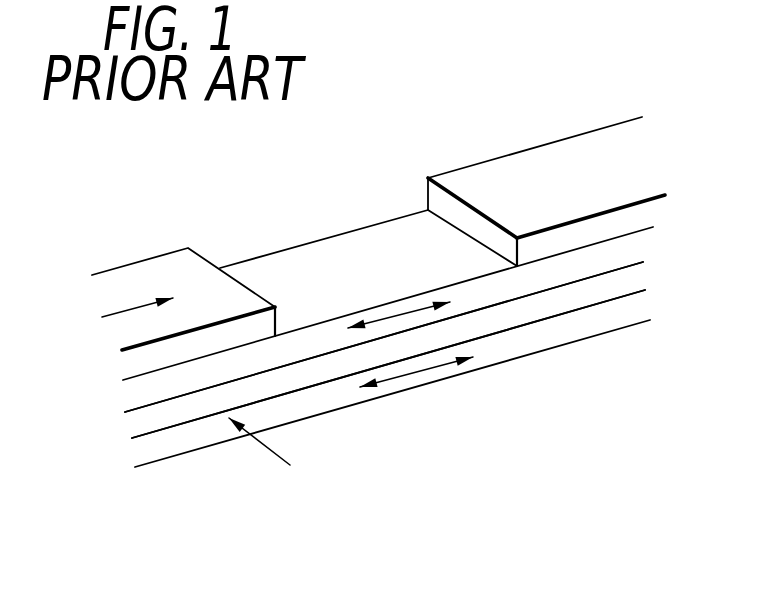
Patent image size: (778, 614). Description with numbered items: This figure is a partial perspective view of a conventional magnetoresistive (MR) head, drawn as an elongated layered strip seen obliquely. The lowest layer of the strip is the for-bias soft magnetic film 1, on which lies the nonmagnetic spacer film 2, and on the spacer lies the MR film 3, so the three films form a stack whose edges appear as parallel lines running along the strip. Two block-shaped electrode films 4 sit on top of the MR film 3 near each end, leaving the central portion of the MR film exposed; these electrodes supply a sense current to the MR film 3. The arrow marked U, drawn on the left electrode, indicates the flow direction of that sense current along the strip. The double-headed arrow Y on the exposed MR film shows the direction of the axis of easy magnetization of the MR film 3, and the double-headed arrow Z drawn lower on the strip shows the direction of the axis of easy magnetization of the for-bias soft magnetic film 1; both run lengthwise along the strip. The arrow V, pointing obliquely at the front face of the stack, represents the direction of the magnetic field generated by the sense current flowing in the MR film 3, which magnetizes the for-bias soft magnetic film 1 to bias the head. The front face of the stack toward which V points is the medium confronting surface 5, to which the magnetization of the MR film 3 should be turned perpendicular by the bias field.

The for-bias soft magnetic film 1 is at (633, 309).
The nonmagnetic spacer film 2 is at (637, 281).
The MR film 3 is at (642, 249).
The electrode films 4 is at (643, 216).
The medium confronting surface 5 is at (139, 424).
The flow direction of the sense current U is at (133, 300).
The direction of a magnetic field generated by the sense current V is at (272, 453).
The direction of an axis of easy magnetization of the MR film Y is at (417, 303).
The direction of an axis of easy magnetization of the for-bias soft magnetic film Z is at (432, 361).